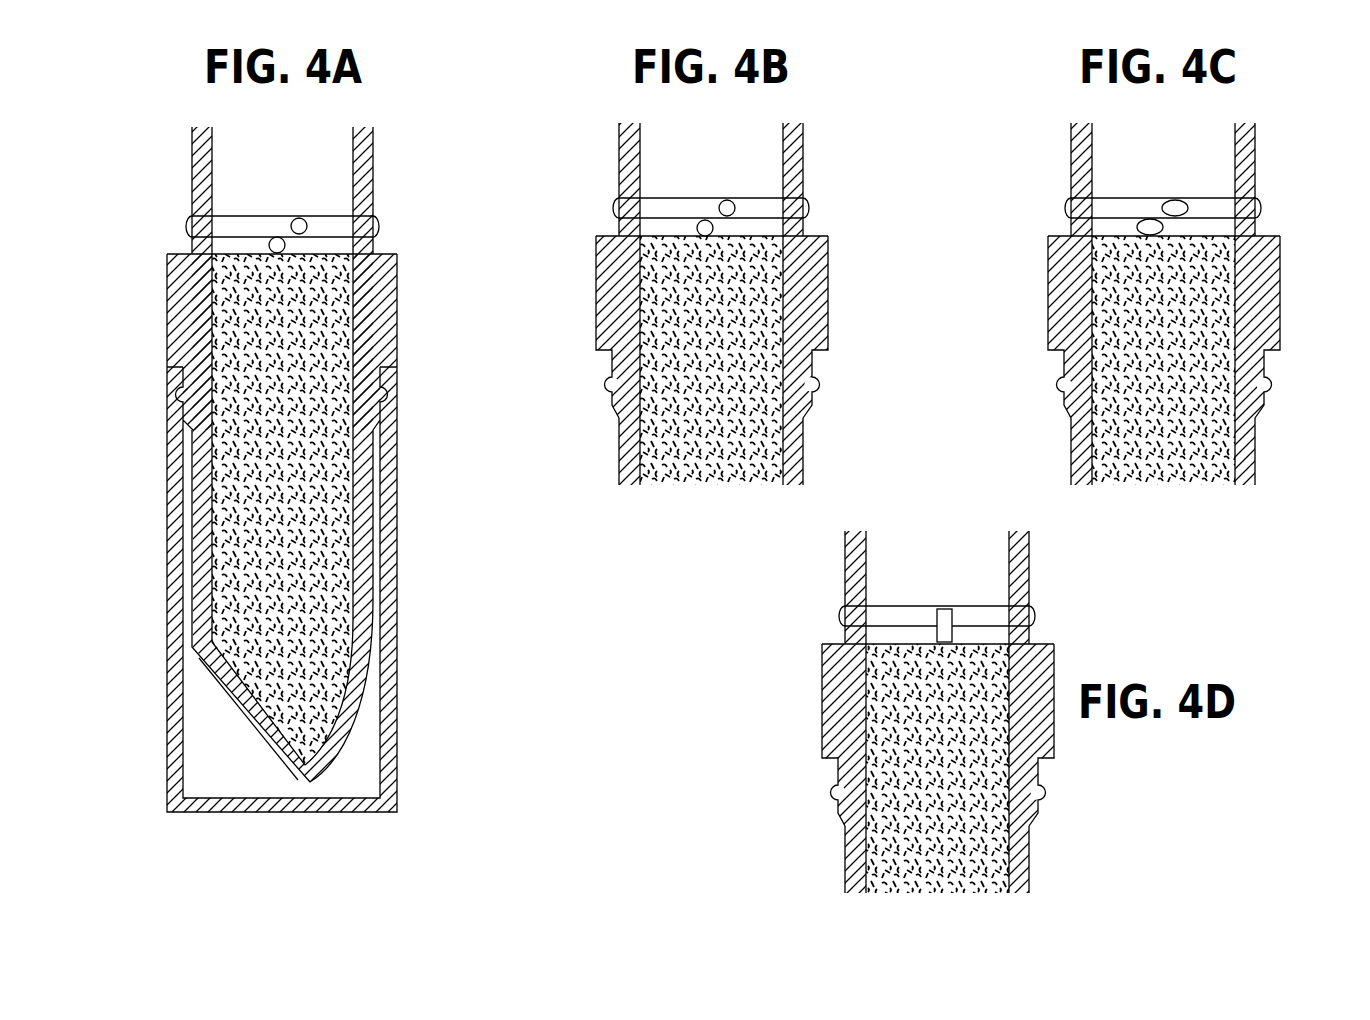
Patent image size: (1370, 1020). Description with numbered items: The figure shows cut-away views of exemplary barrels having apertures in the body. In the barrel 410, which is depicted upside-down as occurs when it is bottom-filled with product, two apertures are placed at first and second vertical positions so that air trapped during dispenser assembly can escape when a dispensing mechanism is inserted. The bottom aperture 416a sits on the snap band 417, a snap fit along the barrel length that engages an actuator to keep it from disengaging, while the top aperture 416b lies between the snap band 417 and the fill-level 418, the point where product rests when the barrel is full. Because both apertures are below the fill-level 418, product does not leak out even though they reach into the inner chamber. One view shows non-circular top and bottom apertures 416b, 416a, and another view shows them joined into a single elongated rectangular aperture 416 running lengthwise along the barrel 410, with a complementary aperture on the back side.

In FIG. 4A, the barrel 410 is at (363, 157).
In FIG. 4D, the elongated aperture 416 is at (935, 622).
In FIG. 4A, the bottom aperture 416a is at (306, 225).
In FIG. 4B, the bottom aperture 416a is at (737, 208).
In FIG. 4C, the bottom aperture 416a is at (1188, 208).
In FIG. 4A, the top aperture 416b is at (285, 245).
In FIG. 4B, the top aperture 416b is at (713, 228).
In FIG. 4C, the top aperture 416b is at (1163, 227).
In FIG. 4A, the snap band 417 is at (225, 225).
In FIG. 4A, the fill-level 418 is at (223, 253).